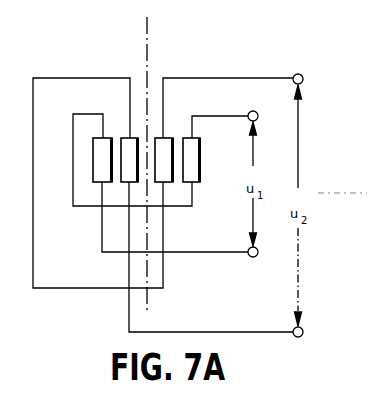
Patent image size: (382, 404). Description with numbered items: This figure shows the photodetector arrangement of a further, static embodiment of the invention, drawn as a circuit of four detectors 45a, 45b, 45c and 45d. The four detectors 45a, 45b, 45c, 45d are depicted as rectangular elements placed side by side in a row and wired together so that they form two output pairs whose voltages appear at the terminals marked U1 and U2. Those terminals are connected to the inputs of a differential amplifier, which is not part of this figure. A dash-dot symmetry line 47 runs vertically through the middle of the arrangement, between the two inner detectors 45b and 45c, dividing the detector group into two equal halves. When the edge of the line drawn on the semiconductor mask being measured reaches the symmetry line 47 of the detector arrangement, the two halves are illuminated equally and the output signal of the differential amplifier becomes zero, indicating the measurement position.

The detector 45a is at (98, 163).
The detector 45b is at (127, 143).
The detector 45c is at (167, 152).
The detector 45d is at (195, 163).
The symmetry line 47 is at (147, 74).